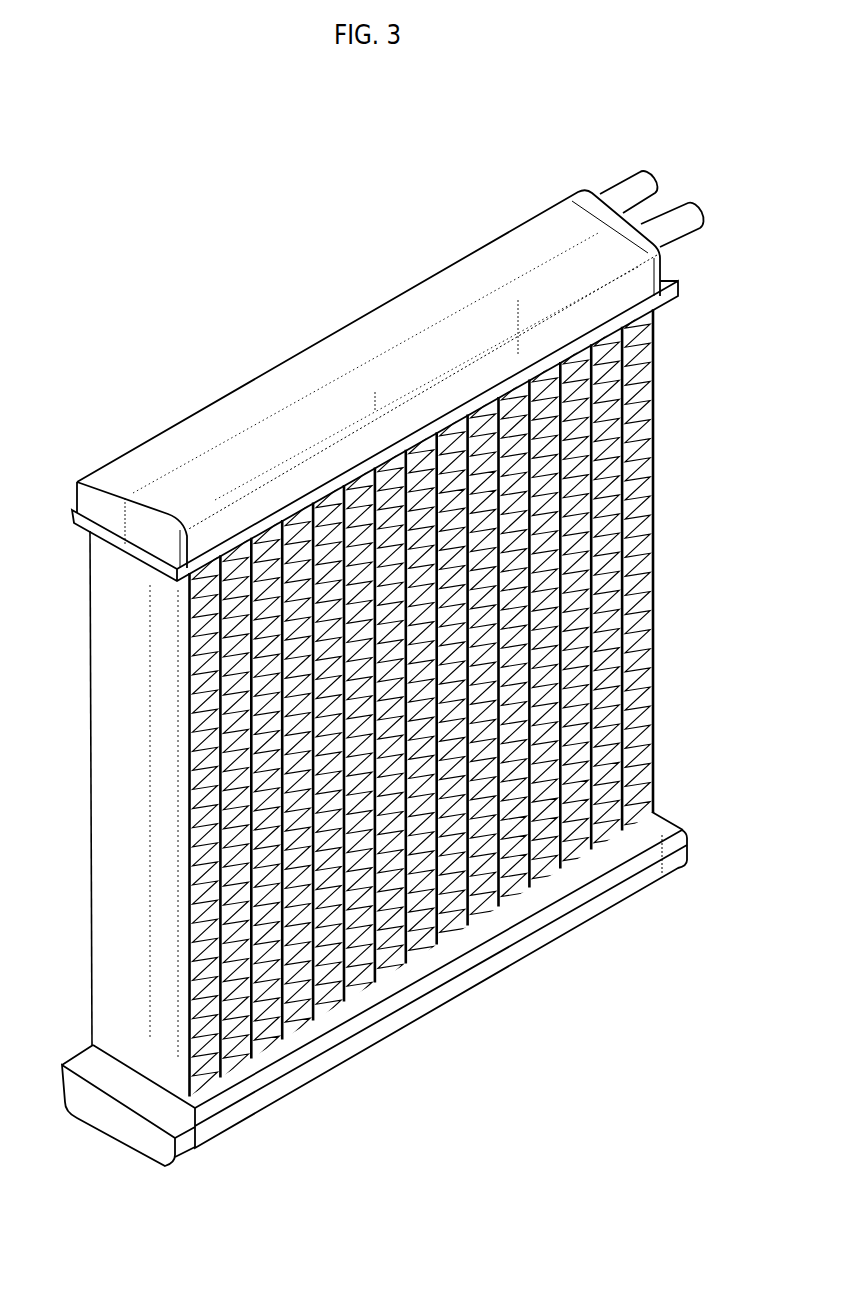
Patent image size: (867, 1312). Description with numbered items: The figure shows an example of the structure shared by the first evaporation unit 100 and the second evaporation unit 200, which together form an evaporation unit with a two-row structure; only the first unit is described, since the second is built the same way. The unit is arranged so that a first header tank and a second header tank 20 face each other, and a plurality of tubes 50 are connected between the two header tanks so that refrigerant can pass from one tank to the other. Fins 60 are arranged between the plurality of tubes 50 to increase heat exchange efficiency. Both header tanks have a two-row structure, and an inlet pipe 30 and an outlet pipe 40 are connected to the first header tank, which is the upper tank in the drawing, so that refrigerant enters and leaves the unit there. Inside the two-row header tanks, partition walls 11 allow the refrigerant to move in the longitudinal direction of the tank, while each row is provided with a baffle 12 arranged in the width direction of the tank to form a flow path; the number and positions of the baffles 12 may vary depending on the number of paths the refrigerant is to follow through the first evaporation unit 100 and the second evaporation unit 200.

The first evaporation unit 100 is at (165, 166).
The second evaporation unit 200 is at (411, 645).
The partition wall 11 is at (412, 333).
The baffle 12 is at (467, 277).
The second header tank 20 is at (662, 826).
The inlet pipe 30 is at (652, 176).
The outlet pipe 40 is at (703, 212).
The tube 50 is at (655, 372).
The fin 60 is at (627, 422).